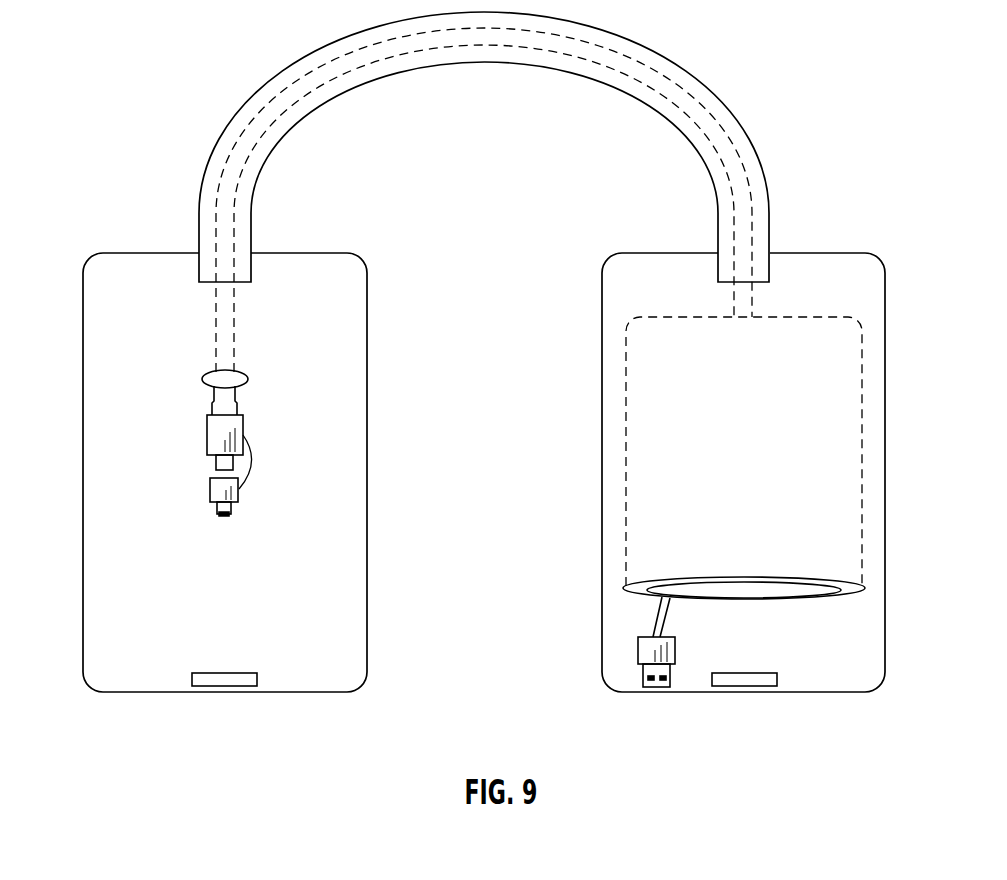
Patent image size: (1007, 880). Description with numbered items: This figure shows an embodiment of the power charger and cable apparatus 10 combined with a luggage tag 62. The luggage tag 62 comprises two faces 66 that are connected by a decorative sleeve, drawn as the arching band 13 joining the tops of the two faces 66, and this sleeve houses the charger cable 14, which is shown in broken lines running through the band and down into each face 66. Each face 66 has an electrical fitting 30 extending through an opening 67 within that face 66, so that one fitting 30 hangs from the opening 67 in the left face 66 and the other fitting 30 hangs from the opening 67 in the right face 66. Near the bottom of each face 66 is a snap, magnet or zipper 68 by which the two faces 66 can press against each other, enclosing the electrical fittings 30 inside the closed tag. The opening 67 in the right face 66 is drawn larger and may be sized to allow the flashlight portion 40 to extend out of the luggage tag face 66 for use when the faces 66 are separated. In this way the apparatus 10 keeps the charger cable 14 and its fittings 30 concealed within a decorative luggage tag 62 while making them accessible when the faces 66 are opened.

The power charger and cable apparatus 10 is at (140, 84).
The headband 13 is at (332, 45).
The cable 14 is at (625, 65).
The electrical fitting 30 is at (272, 459).
The flashlight portion 40 is at (803, 592).
The luggage tag 62 is at (918, 236).
The face 66 is at (90, 605).
The opening 67 is at (210, 372).
The snap, magnet or zipper 68 is at (222, 678).